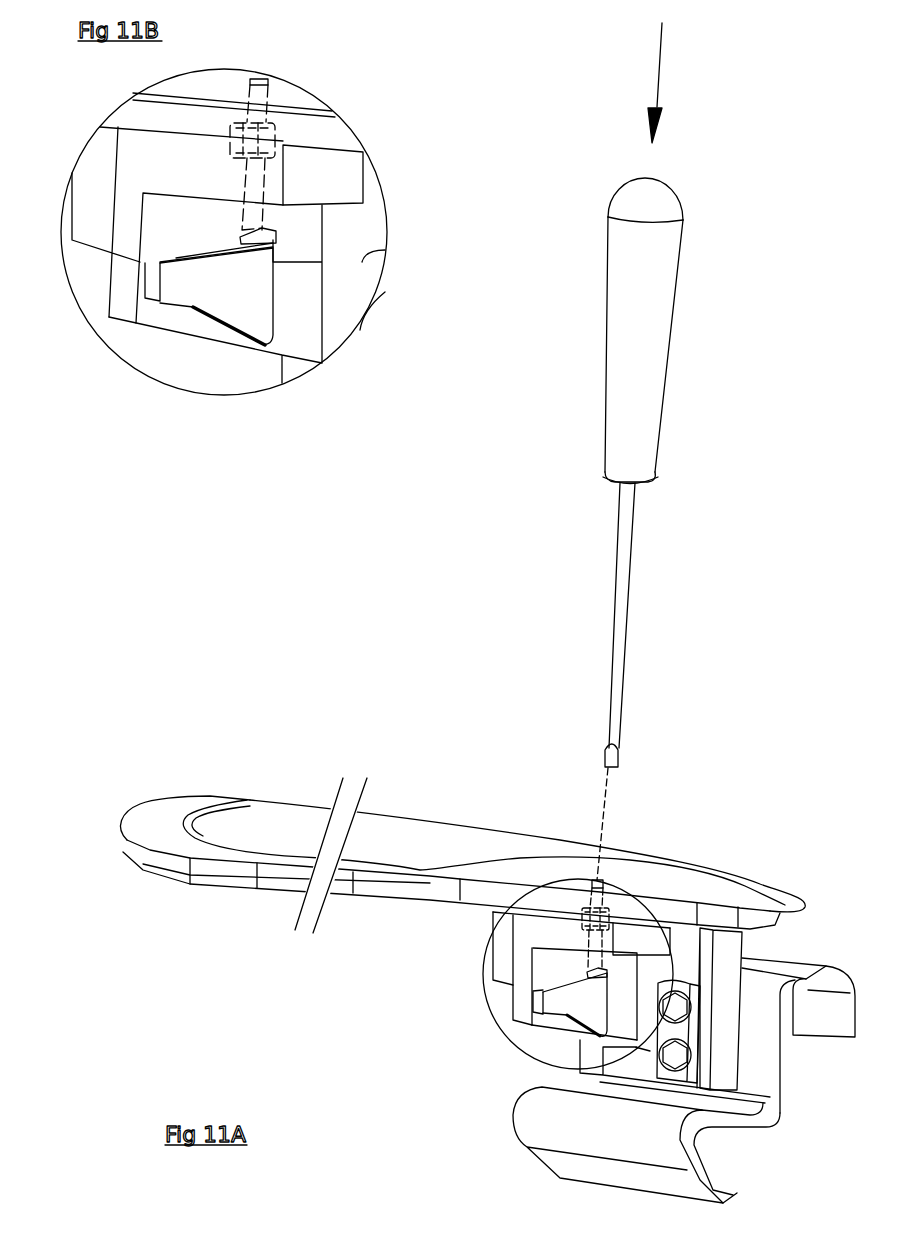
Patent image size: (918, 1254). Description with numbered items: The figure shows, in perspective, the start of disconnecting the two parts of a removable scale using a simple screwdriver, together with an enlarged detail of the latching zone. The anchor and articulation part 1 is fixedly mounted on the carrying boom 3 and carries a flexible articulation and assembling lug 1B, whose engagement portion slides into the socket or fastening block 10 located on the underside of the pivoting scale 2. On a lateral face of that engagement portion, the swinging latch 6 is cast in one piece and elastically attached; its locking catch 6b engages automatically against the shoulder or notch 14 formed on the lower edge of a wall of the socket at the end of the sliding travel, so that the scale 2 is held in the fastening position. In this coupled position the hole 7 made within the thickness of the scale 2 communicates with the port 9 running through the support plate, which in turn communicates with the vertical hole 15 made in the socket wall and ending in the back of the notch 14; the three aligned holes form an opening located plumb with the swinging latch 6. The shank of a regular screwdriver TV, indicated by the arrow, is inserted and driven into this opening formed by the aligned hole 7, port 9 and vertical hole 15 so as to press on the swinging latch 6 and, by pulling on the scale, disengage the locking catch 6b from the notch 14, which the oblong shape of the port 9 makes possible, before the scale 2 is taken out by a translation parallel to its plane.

In FIG. 11A, the anchor and articulation part 1 is at (555, 1023).
In FIG. 11B, the flexible articulation and assembling lug 1B is at (123, 300).
In FIG. 11A, the scale 2 is at (722, 873).
In FIG. 11A, the carrying boom 3 is at (817, 1017).
In FIG. 11B, the swinging latch 6 is at (242, 290).
In FIG. 11A, the swinging latch 6 is at (593, 1015).
In FIG. 11B, the locking catch 6b is at (273, 248).
In FIG. 11B, the hole 7 is at (270, 93).
In FIG. 11A, the hole 7 is at (597, 883).
In FIG. 11B, the port 9 is at (278, 132).
In FIG. 11B, the socket or fastening block 10 is at (152, 157).
In FIG. 11A, the socket or fastening block 10 is at (508, 938).
In FIG. 11B, the shoulder or notch 14 is at (280, 243).
In FIG. 11B, the vertical hole 15 is at (267, 193).
In FIG. 11A, the screwdriver TV is at (637, 362).